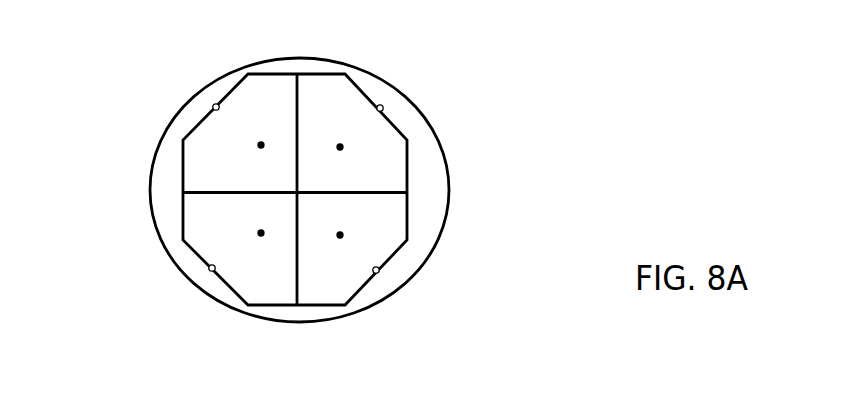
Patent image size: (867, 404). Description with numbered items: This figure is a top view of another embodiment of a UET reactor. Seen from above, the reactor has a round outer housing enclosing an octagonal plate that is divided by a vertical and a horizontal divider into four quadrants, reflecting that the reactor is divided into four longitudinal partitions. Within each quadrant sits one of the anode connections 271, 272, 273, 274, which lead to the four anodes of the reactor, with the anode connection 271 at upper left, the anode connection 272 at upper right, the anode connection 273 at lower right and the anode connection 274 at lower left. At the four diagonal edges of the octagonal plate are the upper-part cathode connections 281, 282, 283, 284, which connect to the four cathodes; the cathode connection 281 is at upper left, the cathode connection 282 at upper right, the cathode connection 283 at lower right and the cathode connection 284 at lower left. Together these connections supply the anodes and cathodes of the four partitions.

The anode connection 271 is at (257, 144).
The anode connection 272 is at (355, 153).
The anode connection 273 is at (348, 237).
The anode connection 274 is at (243, 233).
The cathode connection (upper part) 281 is at (213, 104).
The cathode connection (upper part) 282 is at (383, 106).
The cathode connection (upper part) 283 is at (378, 273).
The cathode connection (upper part) 284 is at (208, 271).